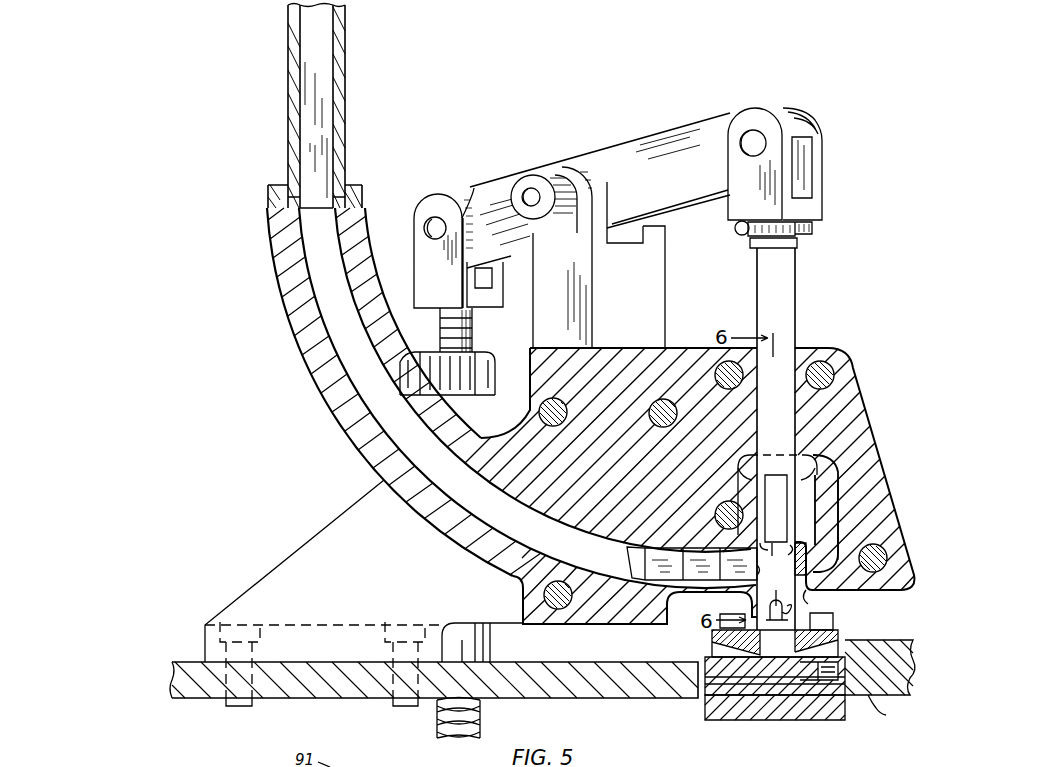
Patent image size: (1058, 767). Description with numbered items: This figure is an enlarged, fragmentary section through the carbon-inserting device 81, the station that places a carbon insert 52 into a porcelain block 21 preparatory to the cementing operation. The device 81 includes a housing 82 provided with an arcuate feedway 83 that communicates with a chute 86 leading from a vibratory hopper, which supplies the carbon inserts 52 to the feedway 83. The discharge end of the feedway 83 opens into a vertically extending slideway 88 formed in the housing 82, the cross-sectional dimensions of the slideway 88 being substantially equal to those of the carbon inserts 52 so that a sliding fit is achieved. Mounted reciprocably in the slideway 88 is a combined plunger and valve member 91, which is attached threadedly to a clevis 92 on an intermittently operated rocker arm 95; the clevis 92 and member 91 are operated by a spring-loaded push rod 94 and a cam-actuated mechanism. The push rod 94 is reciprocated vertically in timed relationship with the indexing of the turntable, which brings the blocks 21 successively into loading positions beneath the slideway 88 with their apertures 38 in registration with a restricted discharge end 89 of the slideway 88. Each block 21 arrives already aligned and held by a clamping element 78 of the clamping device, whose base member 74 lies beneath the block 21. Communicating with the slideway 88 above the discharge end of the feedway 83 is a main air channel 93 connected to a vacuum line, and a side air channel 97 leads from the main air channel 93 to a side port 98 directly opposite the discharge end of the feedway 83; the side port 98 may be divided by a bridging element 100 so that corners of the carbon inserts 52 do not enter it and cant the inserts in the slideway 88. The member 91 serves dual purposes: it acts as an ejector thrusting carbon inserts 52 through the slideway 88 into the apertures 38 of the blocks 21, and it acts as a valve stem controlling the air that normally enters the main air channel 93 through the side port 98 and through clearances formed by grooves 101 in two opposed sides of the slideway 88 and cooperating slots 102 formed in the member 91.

The porcelain block 21 is at (698, 646).
The aperture 38 is at (757, 650).
The carbon insert 52 is at (702, 572).
The base member 74 is at (745, 672).
The clamping element 78 is at (833, 622).
The carbon-inserting device 81 is at (863, 269).
The housing 82 is at (873, 377).
The arcuate feedway 83 is at (308, 263).
The chute 86 is at (346, 26).
The slideway 88 is at (790, 612).
The restricted discharge end 89 is at (808, 603).
The combined plunger and valve member 91 is at (807, 302).
The clevis 92 is at (820, 213).
The main air channel 93 is at (843, 450).
The spring-loaded push rod 94 is at (437, 728).
The rocker arm 95 is at (648, 129).
The side air channel 97 is at (830, 522).
The side port 98 is at (790, 580).
The bridging element 100 is at (845, 530).
The grooves 101 is at (781, 559).
The slots 102 is at (782, 497).